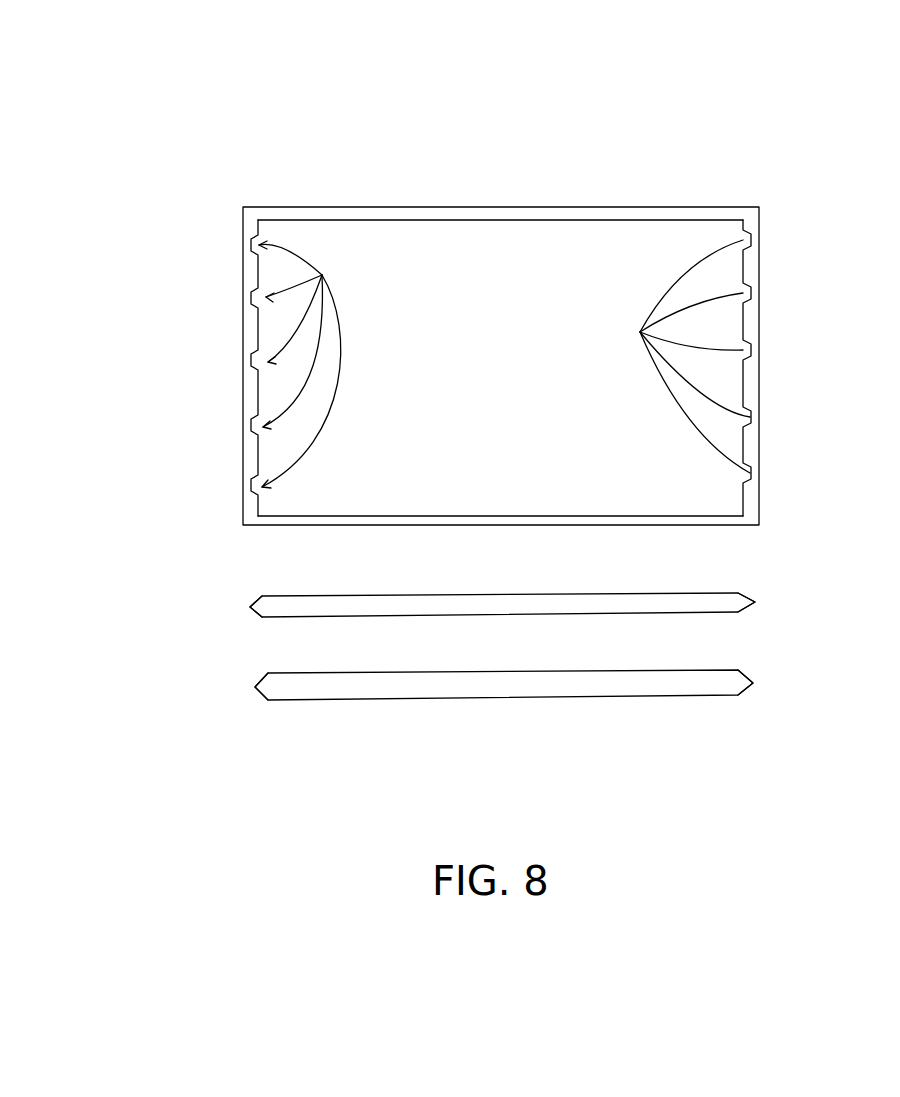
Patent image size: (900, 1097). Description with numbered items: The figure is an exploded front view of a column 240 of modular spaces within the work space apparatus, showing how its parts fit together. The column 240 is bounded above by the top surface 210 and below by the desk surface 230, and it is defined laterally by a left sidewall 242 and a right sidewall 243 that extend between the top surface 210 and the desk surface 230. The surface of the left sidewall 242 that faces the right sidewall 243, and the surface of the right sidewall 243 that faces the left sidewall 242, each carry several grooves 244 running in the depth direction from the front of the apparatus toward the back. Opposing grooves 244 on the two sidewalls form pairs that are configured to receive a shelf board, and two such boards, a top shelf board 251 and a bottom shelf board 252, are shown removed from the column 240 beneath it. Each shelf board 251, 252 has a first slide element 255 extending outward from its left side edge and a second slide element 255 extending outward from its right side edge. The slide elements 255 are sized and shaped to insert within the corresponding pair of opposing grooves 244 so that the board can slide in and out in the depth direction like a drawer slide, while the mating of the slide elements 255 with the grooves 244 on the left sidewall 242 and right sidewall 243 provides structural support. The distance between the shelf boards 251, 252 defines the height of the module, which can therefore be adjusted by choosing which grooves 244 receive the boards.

The column 240 is at (177, 127).
The top surface 210 is at (448, 210).
The desk surface 230 is at (433, 517).
The left sidewall 242 is at (242, 328).
The right sidewall 243 is at (760, 318).
The groove 244 is at (322, 275).
The top shelf board 251 is at (637, 595).
The bottom shelf board 252 is at (662, 697).
The slide element 255 is at (250, 607).